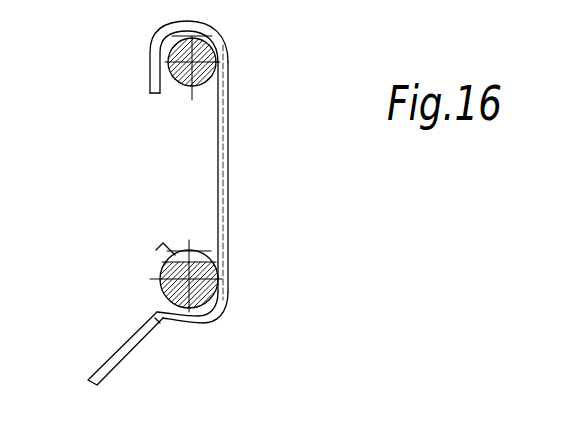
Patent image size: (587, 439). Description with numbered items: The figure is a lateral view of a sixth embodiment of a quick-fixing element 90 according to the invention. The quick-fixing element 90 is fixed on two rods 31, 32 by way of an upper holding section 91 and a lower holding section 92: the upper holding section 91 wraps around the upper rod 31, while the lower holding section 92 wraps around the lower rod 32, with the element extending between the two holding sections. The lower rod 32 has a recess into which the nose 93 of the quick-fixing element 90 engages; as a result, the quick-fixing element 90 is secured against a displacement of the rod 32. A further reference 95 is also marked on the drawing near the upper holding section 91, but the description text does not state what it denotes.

The quick-fixing element 90 is at (228, 159).
The upper holding section 91 is at (196, 21).
The lower holding section 92 is at (207, 322).
The nose 93 is at (198, 255).
The engagement gap 95 is at (212, 86).
The rod 31 is at (183, 58).
The rod 32 is at (165, 290).